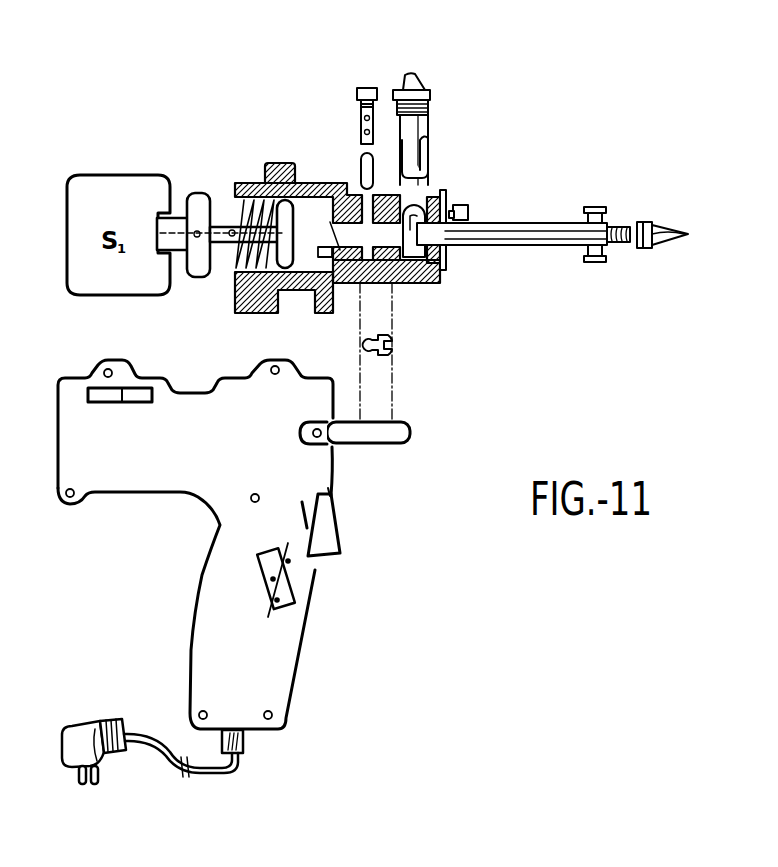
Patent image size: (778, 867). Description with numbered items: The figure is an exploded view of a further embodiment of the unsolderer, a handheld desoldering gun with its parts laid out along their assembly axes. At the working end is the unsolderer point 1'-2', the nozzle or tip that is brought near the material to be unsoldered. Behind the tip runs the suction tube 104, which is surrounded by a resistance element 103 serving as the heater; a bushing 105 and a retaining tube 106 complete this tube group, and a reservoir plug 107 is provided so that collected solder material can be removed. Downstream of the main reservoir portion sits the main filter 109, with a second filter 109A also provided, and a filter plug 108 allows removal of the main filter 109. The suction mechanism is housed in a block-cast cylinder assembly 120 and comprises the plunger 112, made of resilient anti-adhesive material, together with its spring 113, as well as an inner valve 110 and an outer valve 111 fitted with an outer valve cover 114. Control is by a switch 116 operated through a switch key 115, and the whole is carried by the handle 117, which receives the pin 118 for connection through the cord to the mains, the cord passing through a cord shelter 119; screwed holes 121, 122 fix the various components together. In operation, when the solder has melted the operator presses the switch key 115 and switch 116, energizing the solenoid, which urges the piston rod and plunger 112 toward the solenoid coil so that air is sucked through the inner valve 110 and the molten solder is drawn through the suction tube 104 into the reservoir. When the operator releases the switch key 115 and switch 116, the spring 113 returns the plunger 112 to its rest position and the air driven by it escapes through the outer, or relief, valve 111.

The resistance element 103 is at (551, 222).
The suction tube 104 is at (536, 240).
The bushing 105 is at (448, 200).
The retaining tube 106 is at (435, 208).
The reservoir plug 107 is at (413, 72).
The filter plug 108 is at (366, 86).
The main filter 109 is at (360, 165).
The second filter 109A is at (428, 150).
The inner valve 110 is at (303, 292).
The outer valve 111 is at (362, 345).
The plunger 112 is at (266, 168).
The spring 113 is at (243, 252).
The outer valve cover 114 is at (380, 448).
The switch key 115 is at (340, 527).
The switch 116 is at (292, 585).
The handle 117 is at (107, 366).
The pin 118 is at (95, 722).
The cord shelter 119 is at (244, 745).
The block-cast cylinder assembly 120 is at (278, 163).
The screwed hole 121 is at (468, 210).
The screwed hole 122 is at (275, 374).
The unsolderer point 1'-2' is at (653, 175).